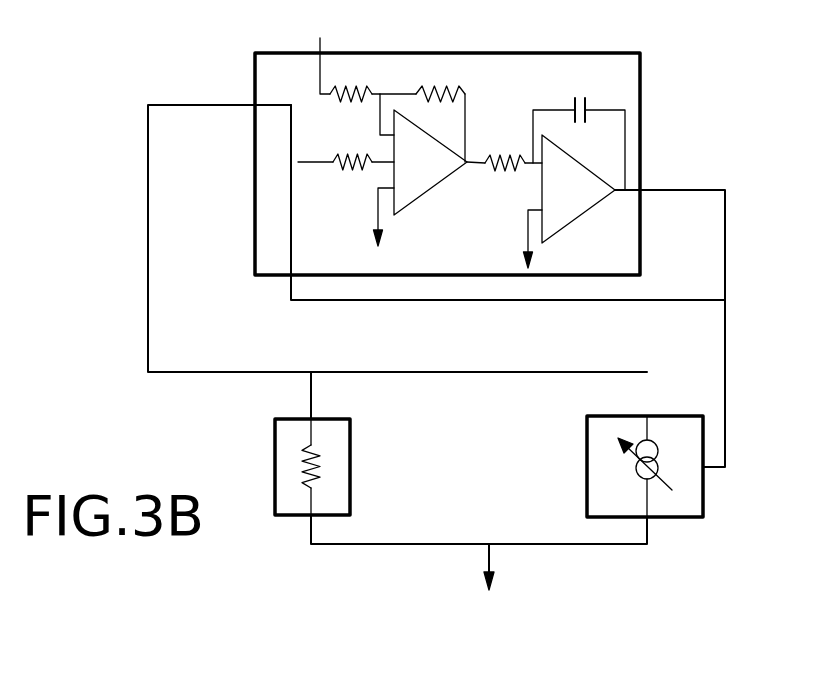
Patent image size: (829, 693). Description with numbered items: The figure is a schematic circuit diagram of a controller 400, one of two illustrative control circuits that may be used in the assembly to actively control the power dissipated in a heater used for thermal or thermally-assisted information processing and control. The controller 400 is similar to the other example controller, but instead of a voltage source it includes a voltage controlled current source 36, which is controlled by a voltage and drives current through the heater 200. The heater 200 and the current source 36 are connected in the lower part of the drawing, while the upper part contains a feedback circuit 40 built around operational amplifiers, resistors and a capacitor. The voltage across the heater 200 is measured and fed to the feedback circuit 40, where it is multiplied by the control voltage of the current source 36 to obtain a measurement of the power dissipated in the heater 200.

The controller 400 is at (85, 278).
The feedback circuit 40 is at (642, 93).
The heater 200 is at (350, 443).
The voltage controlled current source 36 is at (703, 505).